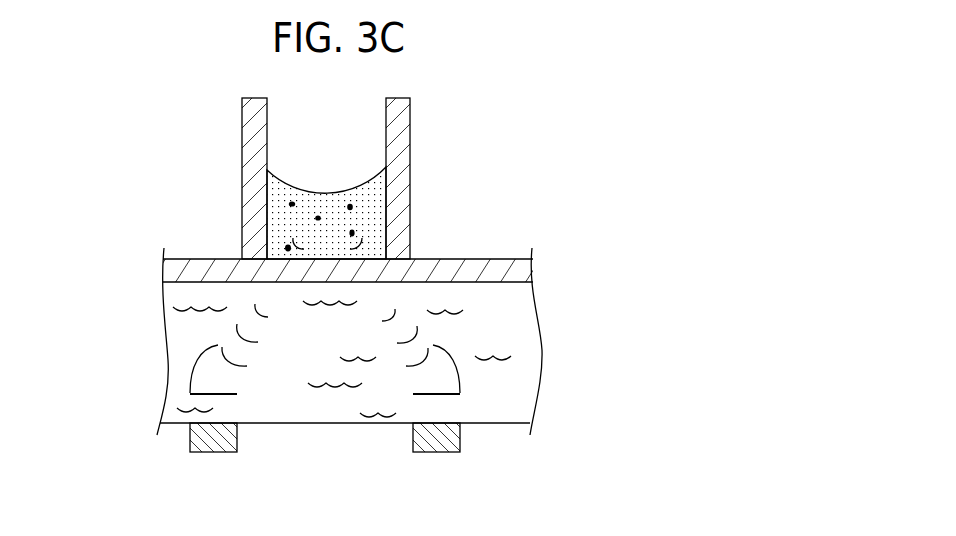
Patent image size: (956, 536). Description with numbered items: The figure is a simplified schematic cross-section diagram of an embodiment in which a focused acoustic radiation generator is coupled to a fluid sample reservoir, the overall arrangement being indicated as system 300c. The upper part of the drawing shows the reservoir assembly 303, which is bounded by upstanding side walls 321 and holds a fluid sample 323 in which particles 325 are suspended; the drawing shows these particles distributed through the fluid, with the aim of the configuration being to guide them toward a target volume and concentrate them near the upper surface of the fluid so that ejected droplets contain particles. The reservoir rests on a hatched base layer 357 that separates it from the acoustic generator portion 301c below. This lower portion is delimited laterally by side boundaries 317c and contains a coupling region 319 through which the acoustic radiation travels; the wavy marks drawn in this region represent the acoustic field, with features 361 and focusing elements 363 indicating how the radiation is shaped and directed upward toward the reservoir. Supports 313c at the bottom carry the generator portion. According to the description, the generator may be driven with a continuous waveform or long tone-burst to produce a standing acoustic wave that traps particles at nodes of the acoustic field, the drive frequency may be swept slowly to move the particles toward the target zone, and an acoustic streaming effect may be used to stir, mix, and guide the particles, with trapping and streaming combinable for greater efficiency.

The reservoir assembly 300c is at (488, 166).
The reservoir 303 is at (219, 184).
The reservoir wall 321 is at (410, 148).
The dispensing material 323 is at (367, 201).
The active ingredient particles 325 is at (290, 204).
The base plate 357 is at (430, 258).
The housing side wall 317c is at (186, 358).
The fluid chamber 319 is at (522, 315).
The flow indicators 361 is at (247, 331).
The flow guide 363 is at (222, 388).
The device 301c is at (148, 427).
The support feet 313c is at (238, 437).